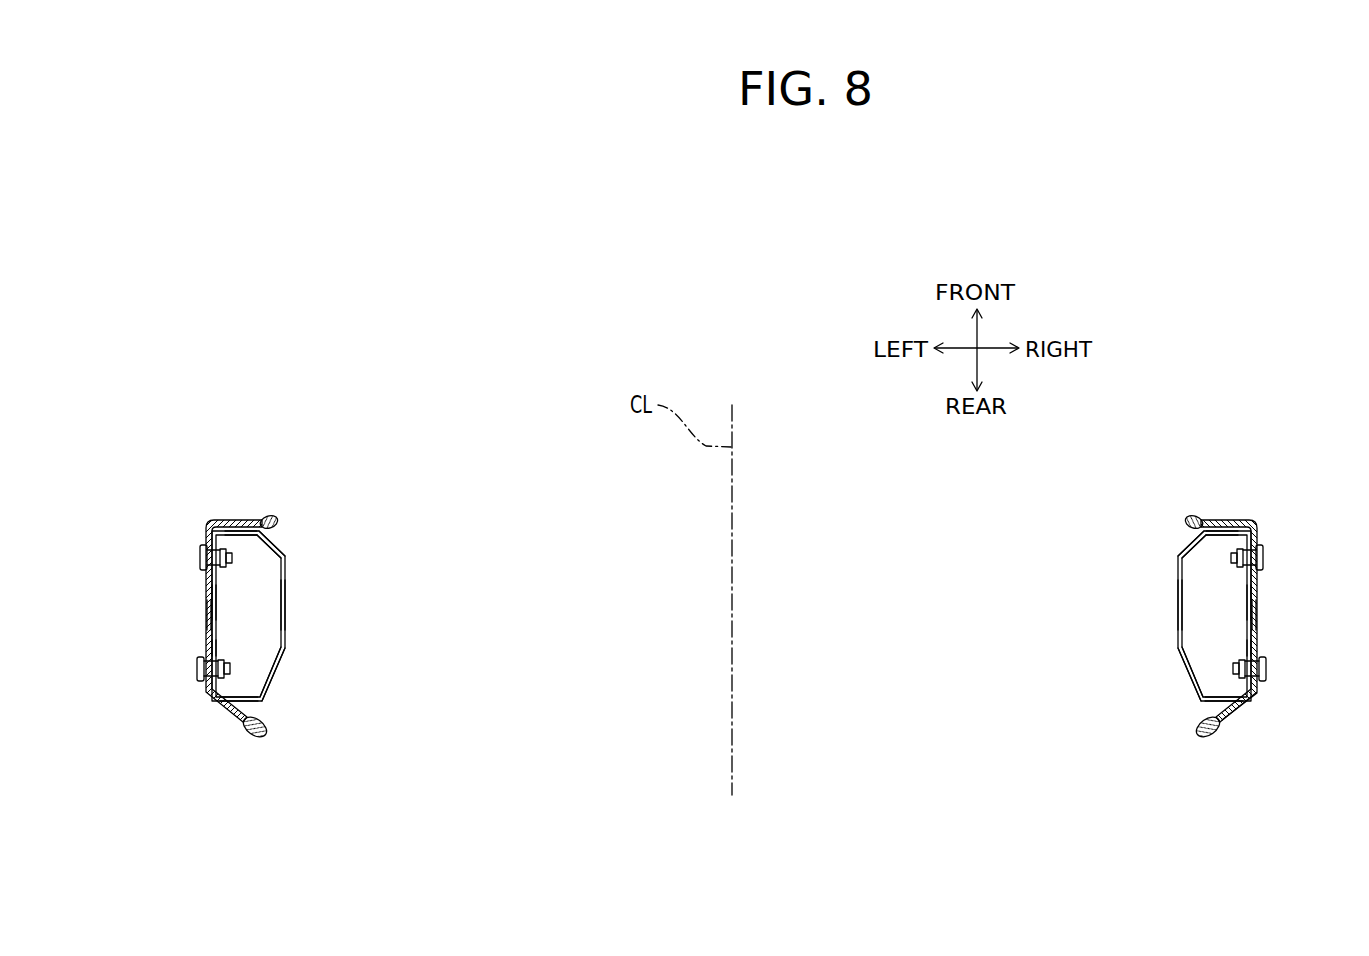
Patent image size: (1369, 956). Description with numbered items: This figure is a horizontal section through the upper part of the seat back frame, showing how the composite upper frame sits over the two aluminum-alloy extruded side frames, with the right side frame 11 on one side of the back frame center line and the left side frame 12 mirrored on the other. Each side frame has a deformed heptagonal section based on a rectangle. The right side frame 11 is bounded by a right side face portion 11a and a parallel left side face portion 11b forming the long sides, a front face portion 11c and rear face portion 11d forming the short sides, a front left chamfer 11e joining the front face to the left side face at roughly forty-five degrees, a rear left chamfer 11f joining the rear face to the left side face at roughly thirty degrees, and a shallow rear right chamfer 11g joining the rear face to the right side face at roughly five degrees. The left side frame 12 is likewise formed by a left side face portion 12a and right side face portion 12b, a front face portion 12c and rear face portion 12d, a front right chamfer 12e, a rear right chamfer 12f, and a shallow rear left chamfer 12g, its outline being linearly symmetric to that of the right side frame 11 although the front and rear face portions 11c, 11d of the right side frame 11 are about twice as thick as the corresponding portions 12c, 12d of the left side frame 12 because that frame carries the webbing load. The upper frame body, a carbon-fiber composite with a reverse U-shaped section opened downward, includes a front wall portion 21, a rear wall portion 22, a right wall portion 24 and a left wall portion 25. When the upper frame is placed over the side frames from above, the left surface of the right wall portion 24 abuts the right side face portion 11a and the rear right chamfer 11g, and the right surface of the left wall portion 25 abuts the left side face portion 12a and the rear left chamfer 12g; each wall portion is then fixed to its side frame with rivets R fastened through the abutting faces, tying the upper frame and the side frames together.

The right side frame 11 is at (1177, 573).
The right side face portion 11a is at (1258, 597).
The left side face portion 11b is at (1177, 598).
The front face portion 11c is at (1210, 518).
The rear face portion 11d is at (1227, 702).
The front left chamfer 11e is at (1187, 540).
The rear left chamfer 11f is at (1192, 677).
The rear right chamfer 11g is at (1257, 647).
The left side frame 12 is at (285, 575).
The left side face portion 12a is at (208, 600).
The right side face portion 12b is at (285, 602).
The front face portion 12c is at (252, 520).
The rear face portion 12d is at (235, 702).
The front right chamfer 12e is at (276, 537).
The rear right chamfer 12f is at (272, 678).
The rear left chamfer 12g is at (208, 650).
The front wall portion 21 is at (233, 519).
The rear wall portion 22 is at (1243, 712).
The right wall portion 24 is at (1262, 612).
The left wall portion 25 is at (200, 613).
The rivet R is at (203, 558).